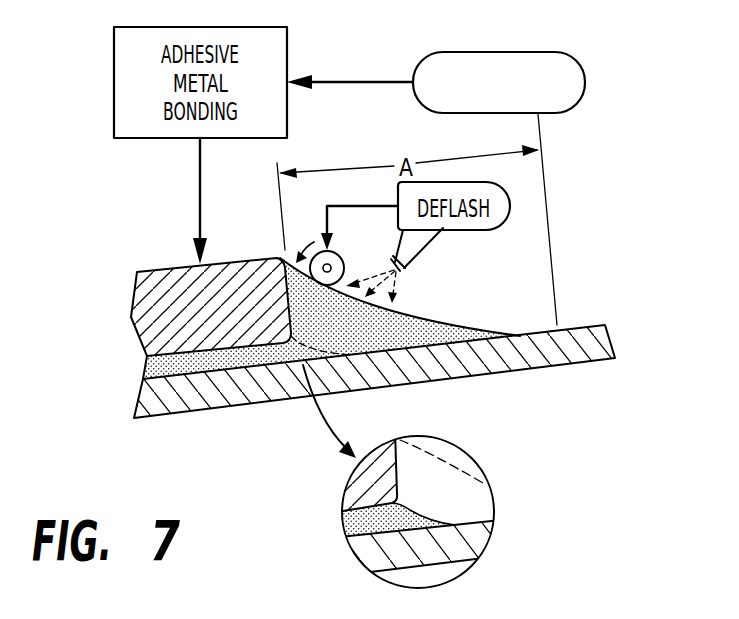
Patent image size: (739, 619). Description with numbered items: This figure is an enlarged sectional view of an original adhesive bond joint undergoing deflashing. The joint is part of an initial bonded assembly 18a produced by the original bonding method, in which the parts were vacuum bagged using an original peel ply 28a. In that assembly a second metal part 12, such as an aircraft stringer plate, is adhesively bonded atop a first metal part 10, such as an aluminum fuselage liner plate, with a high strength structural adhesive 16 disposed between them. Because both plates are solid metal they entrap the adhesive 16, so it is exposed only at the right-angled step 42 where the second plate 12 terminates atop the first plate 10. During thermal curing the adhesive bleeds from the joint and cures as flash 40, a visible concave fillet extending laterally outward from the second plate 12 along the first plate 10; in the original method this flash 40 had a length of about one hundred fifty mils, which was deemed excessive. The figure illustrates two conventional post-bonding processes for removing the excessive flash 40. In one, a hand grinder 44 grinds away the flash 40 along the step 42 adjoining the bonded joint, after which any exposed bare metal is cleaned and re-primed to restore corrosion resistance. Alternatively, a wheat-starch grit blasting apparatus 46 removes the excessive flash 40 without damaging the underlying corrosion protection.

The first metal part 10 is at (138, 396).
The second metal part 12 is at (130, 311).
The structural adhesive 16 is at (143, 369).
The initial bonded assembly 18a is at (100, 338).
The original peel ply 28a is at (540, 52).
The cured adhesive flash 40 is at (423, 320).
The right-angled step 42 is at (305, 309).
The hand grinder 44 is at (343, 257).
The wheat-starch grit blasting apparatus 46 is at (427, 248).